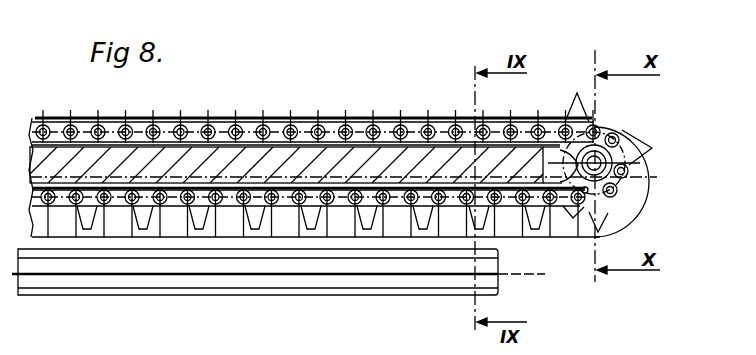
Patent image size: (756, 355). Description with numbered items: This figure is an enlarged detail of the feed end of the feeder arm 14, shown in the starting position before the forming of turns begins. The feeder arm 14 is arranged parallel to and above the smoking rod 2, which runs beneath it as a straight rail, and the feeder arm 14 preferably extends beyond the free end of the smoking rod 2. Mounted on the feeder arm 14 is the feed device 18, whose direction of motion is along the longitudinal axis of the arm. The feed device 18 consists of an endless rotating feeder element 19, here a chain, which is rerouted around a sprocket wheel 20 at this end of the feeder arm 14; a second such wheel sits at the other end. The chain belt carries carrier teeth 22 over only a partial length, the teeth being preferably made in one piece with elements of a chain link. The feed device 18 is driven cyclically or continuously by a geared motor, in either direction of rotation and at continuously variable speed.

The smoking rod 2 is at (408, 278).
The feeder arm 14 is at (636, 198).
The feed device 18 is at (637, 135).
The feeder element 19 is at (325, 118).
The sprocket wheel 20 is at (584, 193).
The carrier teeth 22 is at (313, 220).